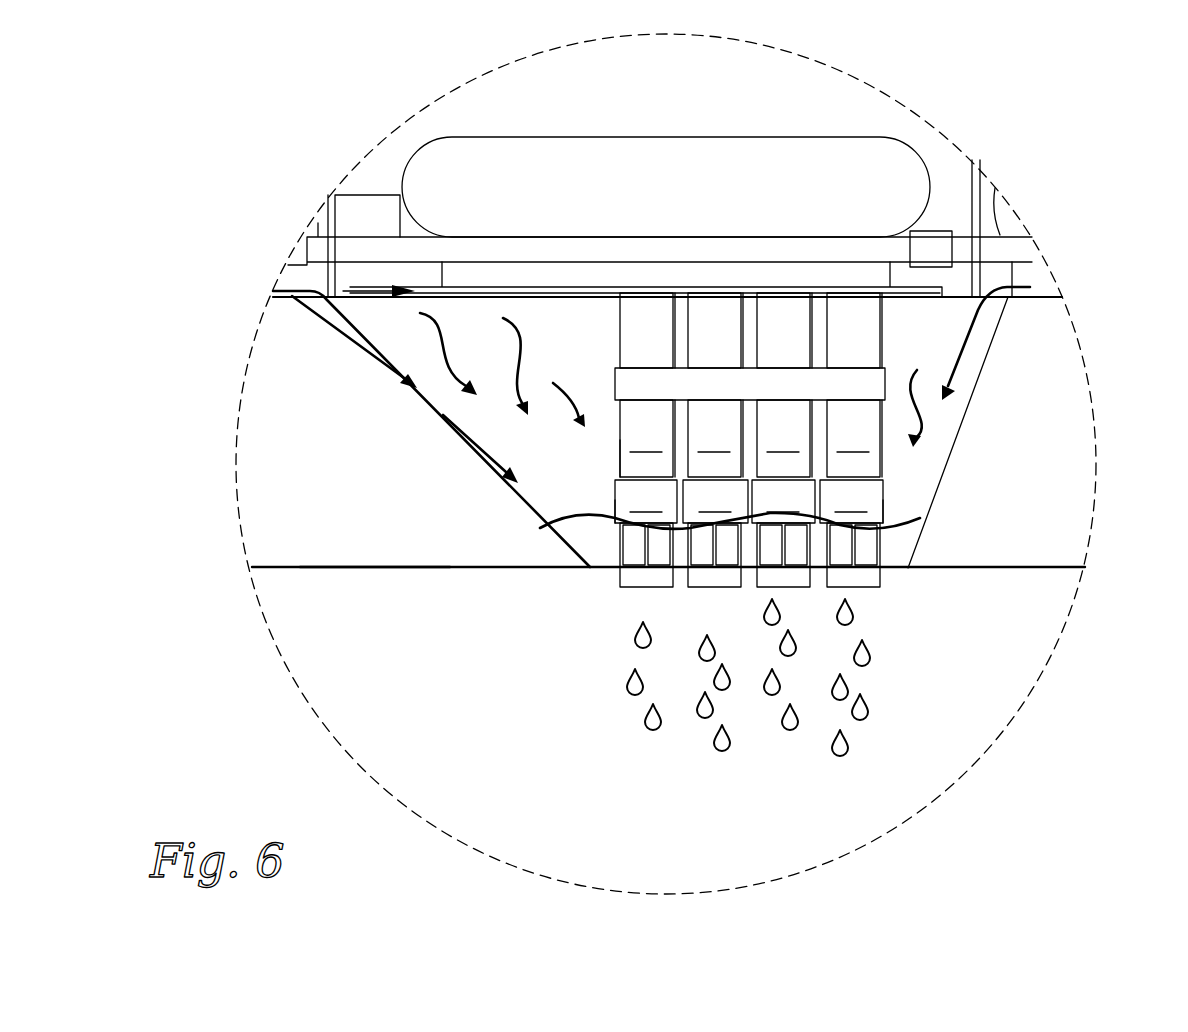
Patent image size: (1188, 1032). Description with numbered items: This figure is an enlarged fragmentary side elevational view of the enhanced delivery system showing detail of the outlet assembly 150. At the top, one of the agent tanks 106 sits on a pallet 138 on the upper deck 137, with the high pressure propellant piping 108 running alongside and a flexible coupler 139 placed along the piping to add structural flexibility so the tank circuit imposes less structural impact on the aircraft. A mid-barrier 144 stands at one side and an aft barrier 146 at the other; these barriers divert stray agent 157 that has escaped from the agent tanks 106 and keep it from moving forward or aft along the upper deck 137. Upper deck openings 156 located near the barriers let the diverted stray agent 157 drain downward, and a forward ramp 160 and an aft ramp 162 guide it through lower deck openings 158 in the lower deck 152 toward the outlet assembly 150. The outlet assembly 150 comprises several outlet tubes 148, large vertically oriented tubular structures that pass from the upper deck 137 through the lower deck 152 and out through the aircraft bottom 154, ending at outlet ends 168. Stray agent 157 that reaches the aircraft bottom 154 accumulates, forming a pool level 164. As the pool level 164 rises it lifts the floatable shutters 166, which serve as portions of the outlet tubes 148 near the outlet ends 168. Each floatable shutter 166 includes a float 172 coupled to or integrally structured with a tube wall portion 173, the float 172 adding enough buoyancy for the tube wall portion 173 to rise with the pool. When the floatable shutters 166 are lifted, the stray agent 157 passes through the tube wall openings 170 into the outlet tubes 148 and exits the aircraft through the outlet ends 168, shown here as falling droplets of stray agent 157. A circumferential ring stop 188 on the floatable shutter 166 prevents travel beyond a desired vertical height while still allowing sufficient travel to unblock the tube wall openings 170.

The agent tanks 106 is at (668, 137).
The high pressure propellant piping 108 is at (782, 245).
The upper deck 137 is at (1027, 265).
The pallets 138 is at (583, 285).
The flexible couplers 139 is at (917, 248).
The mid-barrier 144 is at (338, 217).
The aft barrier 146 is at (972, 193).
The outlet tubes 148 is at (648, 322).
The outlet assembly 150 is at (560, 393).
The lower deck 152 is at (340, 567).
The aircraft bottom 154 is at (370, 570).
The upper deck openings 156 is at (307, 297).
The stray agent 157 is at (518, 352).
The lower deck openings 158 is at (443, 397).
The forward ramp 160 is at (395, 387).
The aft ramp 162 is at (952, 452).
The pool level 164 is at (570, 518).
The floatable shutters 166 is at (613, 493).
The outlet ends 168 is at (632, 590).
The tube wall openings 170 is at (633, 545).
The floats 172 is at (749, 501).
The tube wall portions 173 is at (749, 441).
The circumferential ring stop 188 is at (633, 473).